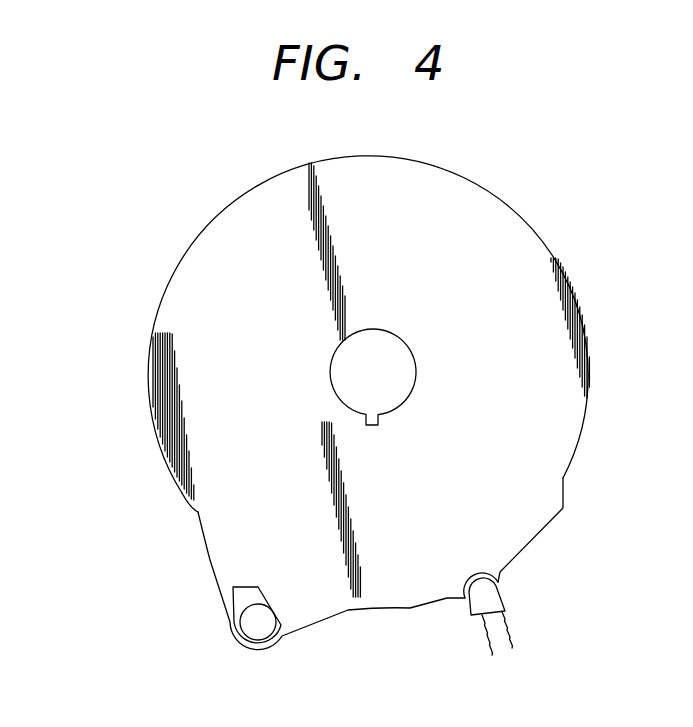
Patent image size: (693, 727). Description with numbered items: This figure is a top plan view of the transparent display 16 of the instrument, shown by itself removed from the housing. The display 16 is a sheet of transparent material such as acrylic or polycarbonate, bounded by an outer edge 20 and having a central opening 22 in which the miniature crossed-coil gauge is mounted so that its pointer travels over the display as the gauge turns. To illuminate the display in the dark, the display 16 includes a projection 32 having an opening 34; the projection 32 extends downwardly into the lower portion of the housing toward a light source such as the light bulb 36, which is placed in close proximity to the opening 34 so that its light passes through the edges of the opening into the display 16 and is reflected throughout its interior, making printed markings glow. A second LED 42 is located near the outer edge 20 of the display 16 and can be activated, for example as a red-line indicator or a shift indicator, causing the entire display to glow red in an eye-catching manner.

The outer edge 20 is at (522, 212).
The transparent display 16 is at (466, 328).
The central opening 22 is at (418, 385).
The projection 32 is at (213, 523).
The opening 34 is at (243, 586).
The light bulb 36 is at (263, 630).
The second LED 42 is at (493, 598).